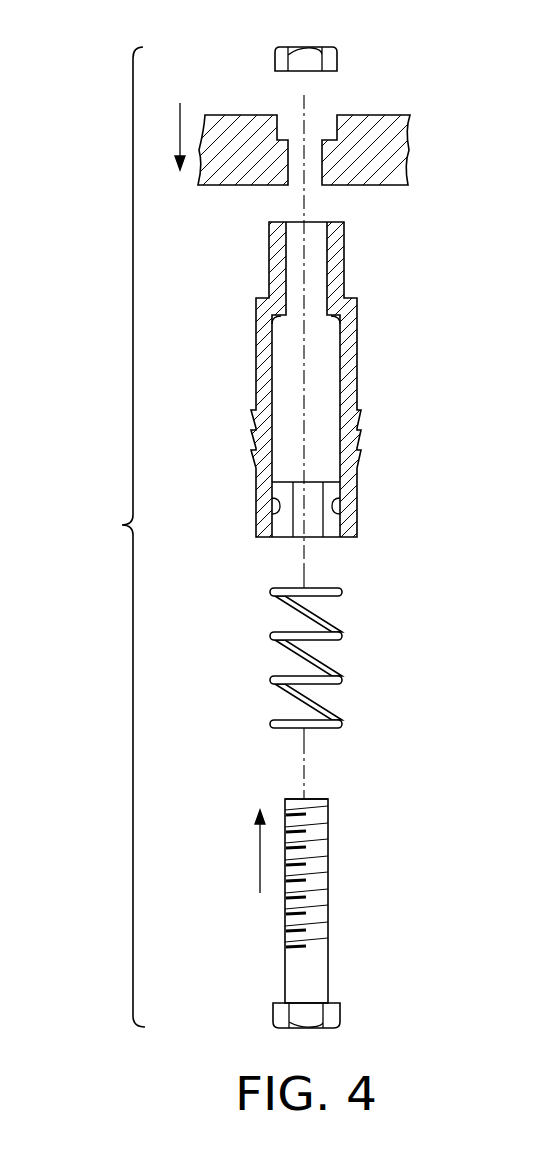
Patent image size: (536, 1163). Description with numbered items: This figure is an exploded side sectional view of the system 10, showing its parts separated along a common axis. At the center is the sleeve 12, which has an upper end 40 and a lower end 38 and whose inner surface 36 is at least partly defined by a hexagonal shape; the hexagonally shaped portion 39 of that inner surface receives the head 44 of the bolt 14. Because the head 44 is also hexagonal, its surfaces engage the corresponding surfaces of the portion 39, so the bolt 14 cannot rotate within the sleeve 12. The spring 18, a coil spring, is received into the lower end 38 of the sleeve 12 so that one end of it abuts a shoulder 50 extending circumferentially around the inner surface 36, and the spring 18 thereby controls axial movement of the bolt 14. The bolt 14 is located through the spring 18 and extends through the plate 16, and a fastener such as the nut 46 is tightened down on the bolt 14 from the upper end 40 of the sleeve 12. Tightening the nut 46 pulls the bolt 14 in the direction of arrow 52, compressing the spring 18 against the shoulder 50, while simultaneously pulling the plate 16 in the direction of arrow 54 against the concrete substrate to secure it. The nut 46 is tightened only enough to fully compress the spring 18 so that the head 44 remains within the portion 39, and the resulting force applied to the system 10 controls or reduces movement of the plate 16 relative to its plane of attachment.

The system 10 is at (117, 517).
The sleeve 12 is at (268, 384).
The bolt 14 is at (329, 881).
The plate 16 is at (222, 186).
The spring 18 is at (343, 635).
The inner surface 36 is at (270, 507).
The lower end 38 is at (331, 538).
The portion 39 is at (333, 507).
The upper end 40 is at (318, 222).
The head 44 is at (320, 795).
The nut 46 is at (282, 46).
The shoulder 50 is at (274, 318).
The arrow 52 is at (258, 859).
The arrow 54 is at (177, 132).